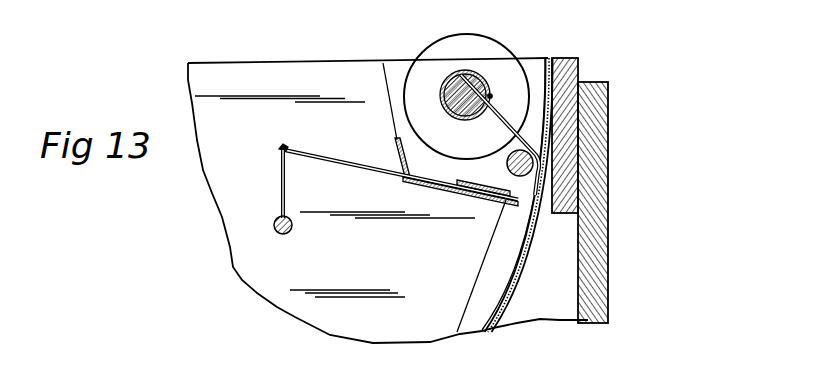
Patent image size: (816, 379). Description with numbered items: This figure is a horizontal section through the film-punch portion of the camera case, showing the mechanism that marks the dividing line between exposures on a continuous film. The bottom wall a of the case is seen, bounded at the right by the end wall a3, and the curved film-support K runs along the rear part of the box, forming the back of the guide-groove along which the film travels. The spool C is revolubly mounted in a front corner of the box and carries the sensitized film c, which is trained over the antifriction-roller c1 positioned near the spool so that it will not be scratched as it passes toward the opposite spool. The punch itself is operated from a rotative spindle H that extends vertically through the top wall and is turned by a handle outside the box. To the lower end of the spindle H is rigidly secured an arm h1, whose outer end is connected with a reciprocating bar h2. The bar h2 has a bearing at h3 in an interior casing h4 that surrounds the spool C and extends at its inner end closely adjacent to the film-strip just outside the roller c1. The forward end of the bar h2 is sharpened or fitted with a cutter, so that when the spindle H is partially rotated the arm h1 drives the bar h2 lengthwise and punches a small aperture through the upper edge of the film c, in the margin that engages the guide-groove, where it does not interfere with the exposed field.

The bottom wall a is at (388, 200).
The end wall a3 is at (598, 130).
The curved film-support K is at (521, 275).
The spool C is at (466, 96).
The sensitized film c is at (503, 118).
The roller c1 is at (508, 162).
The arm h1 is at (286, 190).
The reciprocating bar h2 is at (370, 170).
The bearing h3 is at (488, 198).
The interior casing h4 is at (443, 188).
The rotative spindle H is at (292, 228).